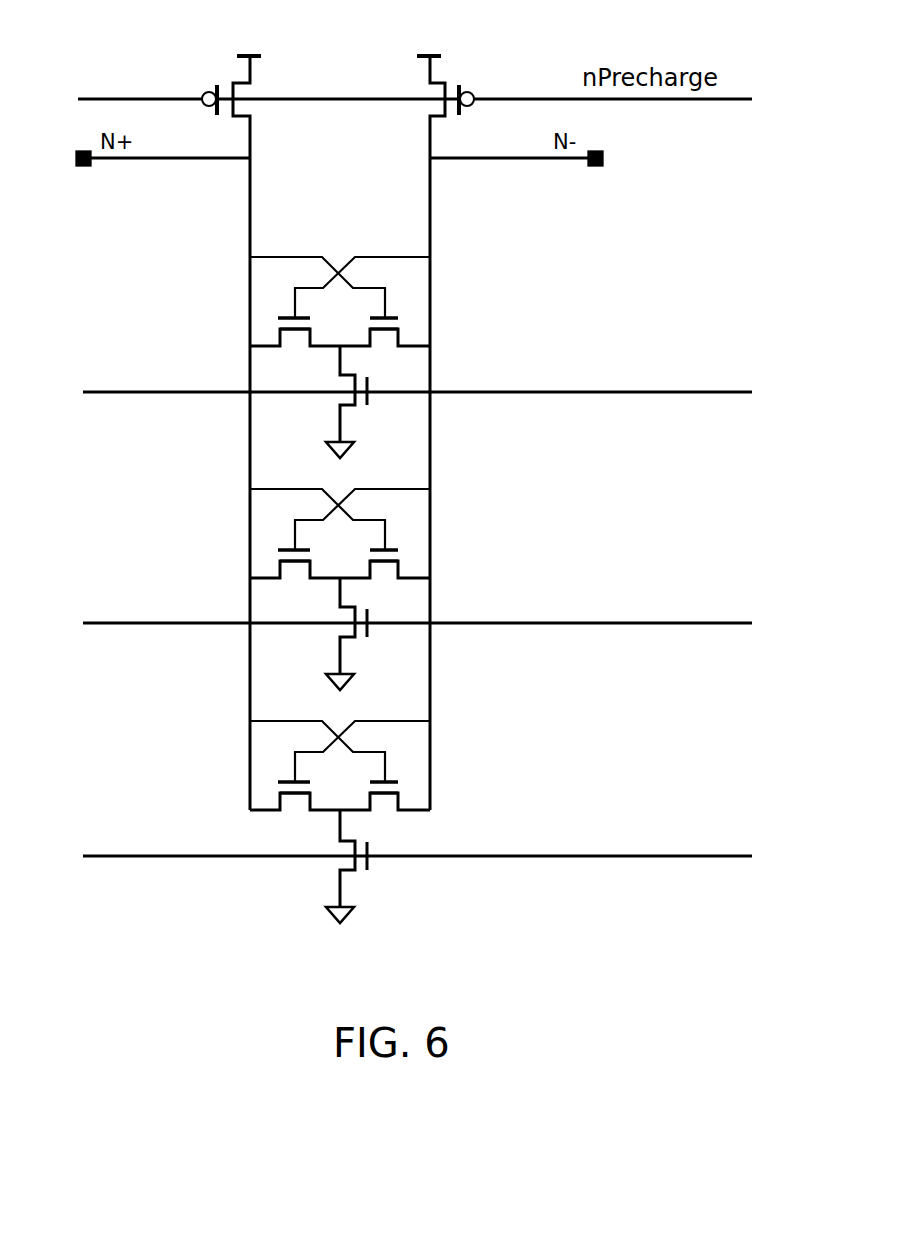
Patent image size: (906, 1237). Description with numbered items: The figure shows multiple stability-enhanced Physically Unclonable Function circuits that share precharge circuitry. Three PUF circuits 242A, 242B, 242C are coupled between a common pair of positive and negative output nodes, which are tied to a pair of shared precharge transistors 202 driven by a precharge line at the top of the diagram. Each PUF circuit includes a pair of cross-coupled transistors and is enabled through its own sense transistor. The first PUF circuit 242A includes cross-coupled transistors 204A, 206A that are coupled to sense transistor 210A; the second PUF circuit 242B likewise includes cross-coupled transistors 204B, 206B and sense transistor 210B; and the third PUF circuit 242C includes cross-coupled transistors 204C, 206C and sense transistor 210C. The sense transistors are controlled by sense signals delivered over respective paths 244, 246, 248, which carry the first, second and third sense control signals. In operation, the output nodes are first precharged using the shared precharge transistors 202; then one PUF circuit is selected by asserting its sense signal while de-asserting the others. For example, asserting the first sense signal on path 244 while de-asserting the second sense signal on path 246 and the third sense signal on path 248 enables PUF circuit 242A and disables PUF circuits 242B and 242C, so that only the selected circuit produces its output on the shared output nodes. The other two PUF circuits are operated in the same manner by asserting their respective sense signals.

The precharge transistors 202 is at (207, 86).
The cross-coupled transistor 204A is at (280, 326).
The cross-coupled transistor 206A is at (400, 326).
The sense transistor 210A is at (352, 410).
The PUF circuit 242A is at (353, 283).
The path 244 is at (662, 394).
The cross-coupled transistor 204B is at (280, 558).
The cross-coupled transistor 206B is at (400, 558).
The sense transistor 210B is at (352, 642).
The PUF circuit 242B is at (353, 514).
The path 246 is at (663, 626).
The cross-coupled transistor 204C is at (282, 774).
The cross-coupled transistor 206C is at (400, 778).
The sense transistor 210C is at (350, 878).
The PUF circuit 242C is at (353, 742).
The path 248 is at (663, 858).